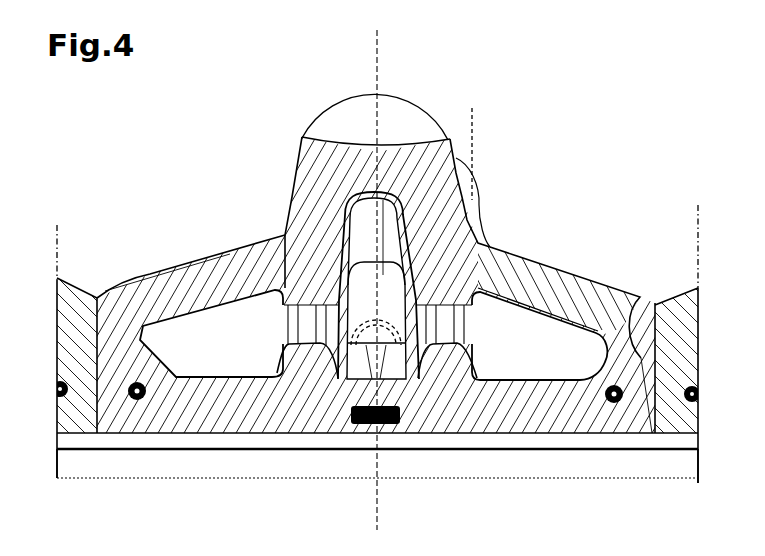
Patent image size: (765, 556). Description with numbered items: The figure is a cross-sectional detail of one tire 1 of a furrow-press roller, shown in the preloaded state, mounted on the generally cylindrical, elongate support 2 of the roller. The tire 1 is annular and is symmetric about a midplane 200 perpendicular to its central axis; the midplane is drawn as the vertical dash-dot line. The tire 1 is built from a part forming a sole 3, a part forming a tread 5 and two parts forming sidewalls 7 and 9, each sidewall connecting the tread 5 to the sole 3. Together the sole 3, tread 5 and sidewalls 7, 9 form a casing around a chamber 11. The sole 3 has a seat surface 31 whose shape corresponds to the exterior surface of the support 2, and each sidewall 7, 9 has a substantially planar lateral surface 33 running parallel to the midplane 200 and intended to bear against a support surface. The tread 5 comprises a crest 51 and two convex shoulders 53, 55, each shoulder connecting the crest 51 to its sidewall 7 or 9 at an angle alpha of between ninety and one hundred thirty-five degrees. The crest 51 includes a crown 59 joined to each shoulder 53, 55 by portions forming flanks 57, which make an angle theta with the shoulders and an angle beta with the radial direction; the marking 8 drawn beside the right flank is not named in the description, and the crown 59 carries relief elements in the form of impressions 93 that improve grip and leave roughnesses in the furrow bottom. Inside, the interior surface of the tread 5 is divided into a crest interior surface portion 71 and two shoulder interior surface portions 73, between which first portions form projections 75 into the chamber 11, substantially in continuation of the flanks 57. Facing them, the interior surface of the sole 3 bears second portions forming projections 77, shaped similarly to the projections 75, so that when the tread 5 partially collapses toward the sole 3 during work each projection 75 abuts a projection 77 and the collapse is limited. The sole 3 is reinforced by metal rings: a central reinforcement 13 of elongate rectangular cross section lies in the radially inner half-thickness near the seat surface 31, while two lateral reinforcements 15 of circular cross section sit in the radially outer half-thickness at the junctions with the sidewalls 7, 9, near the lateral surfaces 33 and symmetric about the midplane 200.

The tire 1 is at (236, 98).
The support 2 is at (398, 455).
The sole 3 is at (507, 410).
The tread 5 is at (493, 243).
The sidewall 7 is at (118, 338).
The inclination angle 8 is at (480, 222).
The sidewall 9 is at (657, 303).
The chamber 11 is at (550, 315).
The central reinforcement 13 is at (366, 430).
The lateral reinforcement 15 is at (137, 395).
The seat surface 31 is at (480, 433).
The lateral surface 33 is at (76, 435).
The crest 51 is at (475, 192).
The shoulder 53 is at (212, 268).
The shoulder 55 is at (592, 283).
The flank 57 is at (298, 180).
The crown 59 is at (360, 148).
The crest interior surface portion 71 is at (342, 243).
The shoulder interior surface portion 73 is at (214, 308).
The projection 75 is at (305, 310).
The projection 77 is at (452, 387).
The impression 93 is at (407, 122).
The midplane 200 is at (385, 50).